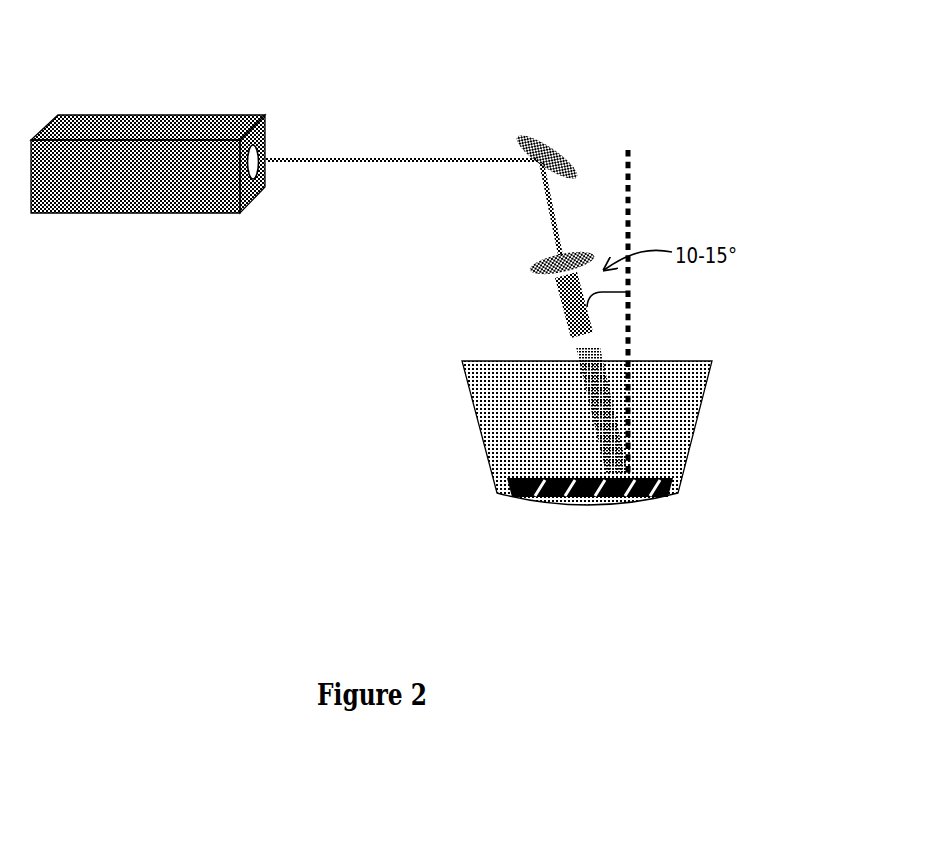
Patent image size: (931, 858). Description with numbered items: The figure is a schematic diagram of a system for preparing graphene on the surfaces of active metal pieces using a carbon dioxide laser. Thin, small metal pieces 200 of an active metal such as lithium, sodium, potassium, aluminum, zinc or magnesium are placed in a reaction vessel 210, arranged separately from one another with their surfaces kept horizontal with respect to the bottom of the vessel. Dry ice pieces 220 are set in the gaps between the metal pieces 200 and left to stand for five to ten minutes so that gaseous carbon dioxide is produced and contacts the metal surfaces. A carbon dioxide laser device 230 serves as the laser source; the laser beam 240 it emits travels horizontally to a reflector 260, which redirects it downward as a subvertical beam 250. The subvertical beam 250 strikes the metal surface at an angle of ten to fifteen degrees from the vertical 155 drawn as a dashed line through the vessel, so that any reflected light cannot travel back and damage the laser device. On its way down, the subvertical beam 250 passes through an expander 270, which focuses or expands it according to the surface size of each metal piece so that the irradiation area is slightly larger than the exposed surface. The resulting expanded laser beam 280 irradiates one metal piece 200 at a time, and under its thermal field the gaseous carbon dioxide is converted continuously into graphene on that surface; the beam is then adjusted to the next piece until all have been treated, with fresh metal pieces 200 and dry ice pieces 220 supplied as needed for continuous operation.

The metal pieces 200 is at (498, 488).
The central axis 155 is at (630, 188).
The reaction vessel 210 is at (705, 373).
The dry ice pieces 220 is at (513, 492).
The carbon dioxide laser device 230 is at (138, 105).
The laser beam 240 is at (412, 150).
The subvertical beam 250 is at (548, 205).
The reflector 260 is at (565, 148).
The expander 270 is at (537, 263).
The expanded laser beam 280 is at (568, 306).